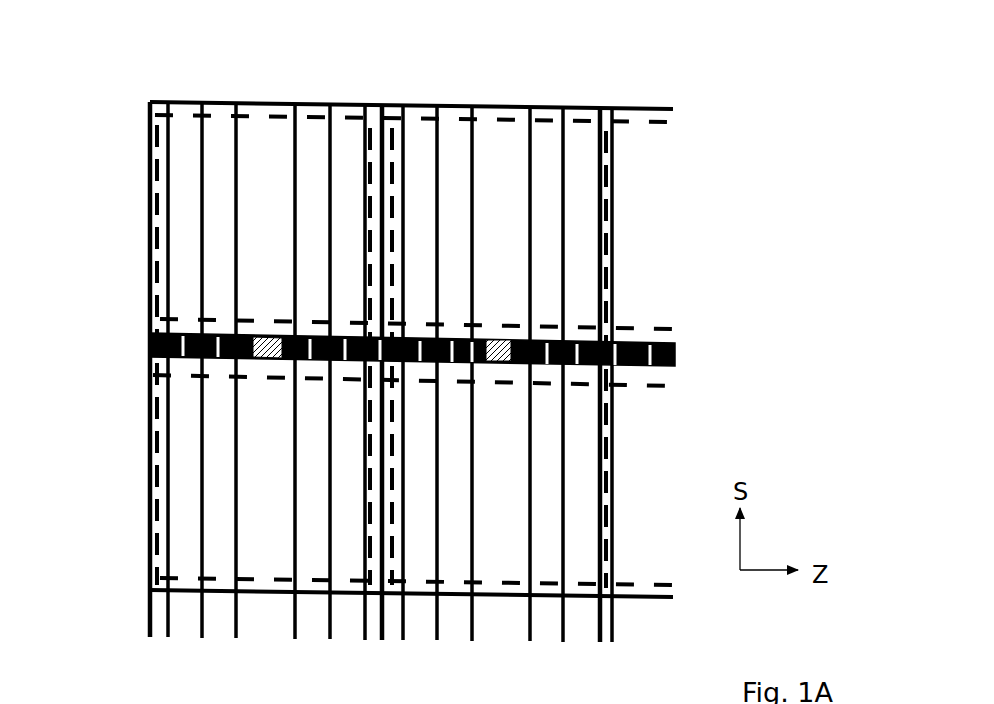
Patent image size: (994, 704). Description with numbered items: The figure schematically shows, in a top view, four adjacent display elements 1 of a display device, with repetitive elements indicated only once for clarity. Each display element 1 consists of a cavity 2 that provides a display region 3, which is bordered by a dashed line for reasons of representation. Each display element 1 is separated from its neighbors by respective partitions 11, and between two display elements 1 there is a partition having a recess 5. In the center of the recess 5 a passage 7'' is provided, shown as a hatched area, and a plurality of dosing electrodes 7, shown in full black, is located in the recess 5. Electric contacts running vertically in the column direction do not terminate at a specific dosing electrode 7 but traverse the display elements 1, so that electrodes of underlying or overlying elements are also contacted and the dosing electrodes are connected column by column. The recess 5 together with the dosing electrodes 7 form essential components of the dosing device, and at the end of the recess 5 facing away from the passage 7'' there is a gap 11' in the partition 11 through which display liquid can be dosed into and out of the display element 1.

The display element 1 is at (420, 370).
The cavity 2 is at (573, 220).
The display region 3 is at (550, 108).
The recess 5 is at (418, 293).
The dosing electrode 7 is at (169, 386).
The passage 7'' is at (592, 256).
The partition 11 is at (433, 352).
The gap 11' is at (454, 396).